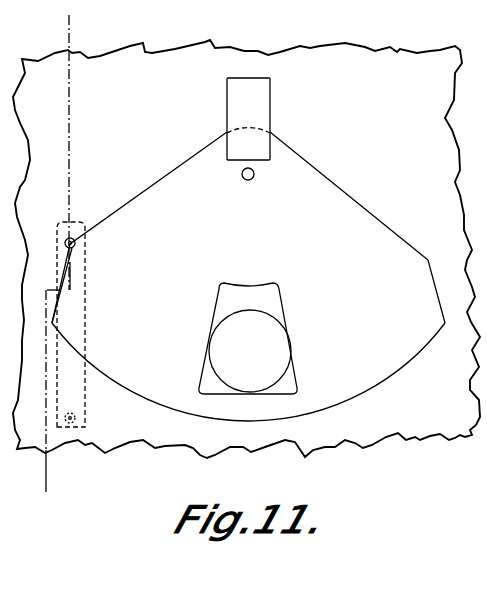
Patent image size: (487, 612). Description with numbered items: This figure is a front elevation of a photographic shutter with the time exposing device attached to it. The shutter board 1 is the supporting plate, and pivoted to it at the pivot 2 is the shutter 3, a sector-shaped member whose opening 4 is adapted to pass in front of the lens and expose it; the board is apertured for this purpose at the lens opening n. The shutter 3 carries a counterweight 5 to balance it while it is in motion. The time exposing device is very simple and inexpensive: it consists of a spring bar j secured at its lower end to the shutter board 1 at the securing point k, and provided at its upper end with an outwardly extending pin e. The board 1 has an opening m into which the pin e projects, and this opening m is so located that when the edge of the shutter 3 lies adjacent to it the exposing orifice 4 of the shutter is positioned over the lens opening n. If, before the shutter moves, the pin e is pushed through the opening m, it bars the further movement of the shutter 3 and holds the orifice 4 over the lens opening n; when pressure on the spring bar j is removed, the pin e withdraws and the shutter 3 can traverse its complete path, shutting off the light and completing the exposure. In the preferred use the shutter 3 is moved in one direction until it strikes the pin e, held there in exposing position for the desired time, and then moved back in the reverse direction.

The shutter board 1 is at (246, 249).
The pivot 2 is at (254, 174).
The shutter 3 is at (248, 276).
The opening 4 is at (270, 296).
The counterweight 5 is at (248, 119).
The pin e is at (82, 226).
The opening m is at (63, 247).
The spring bar j is at (58, 265).
The securing point k is at (79, 417).
The lens opening n is at (250, 351).